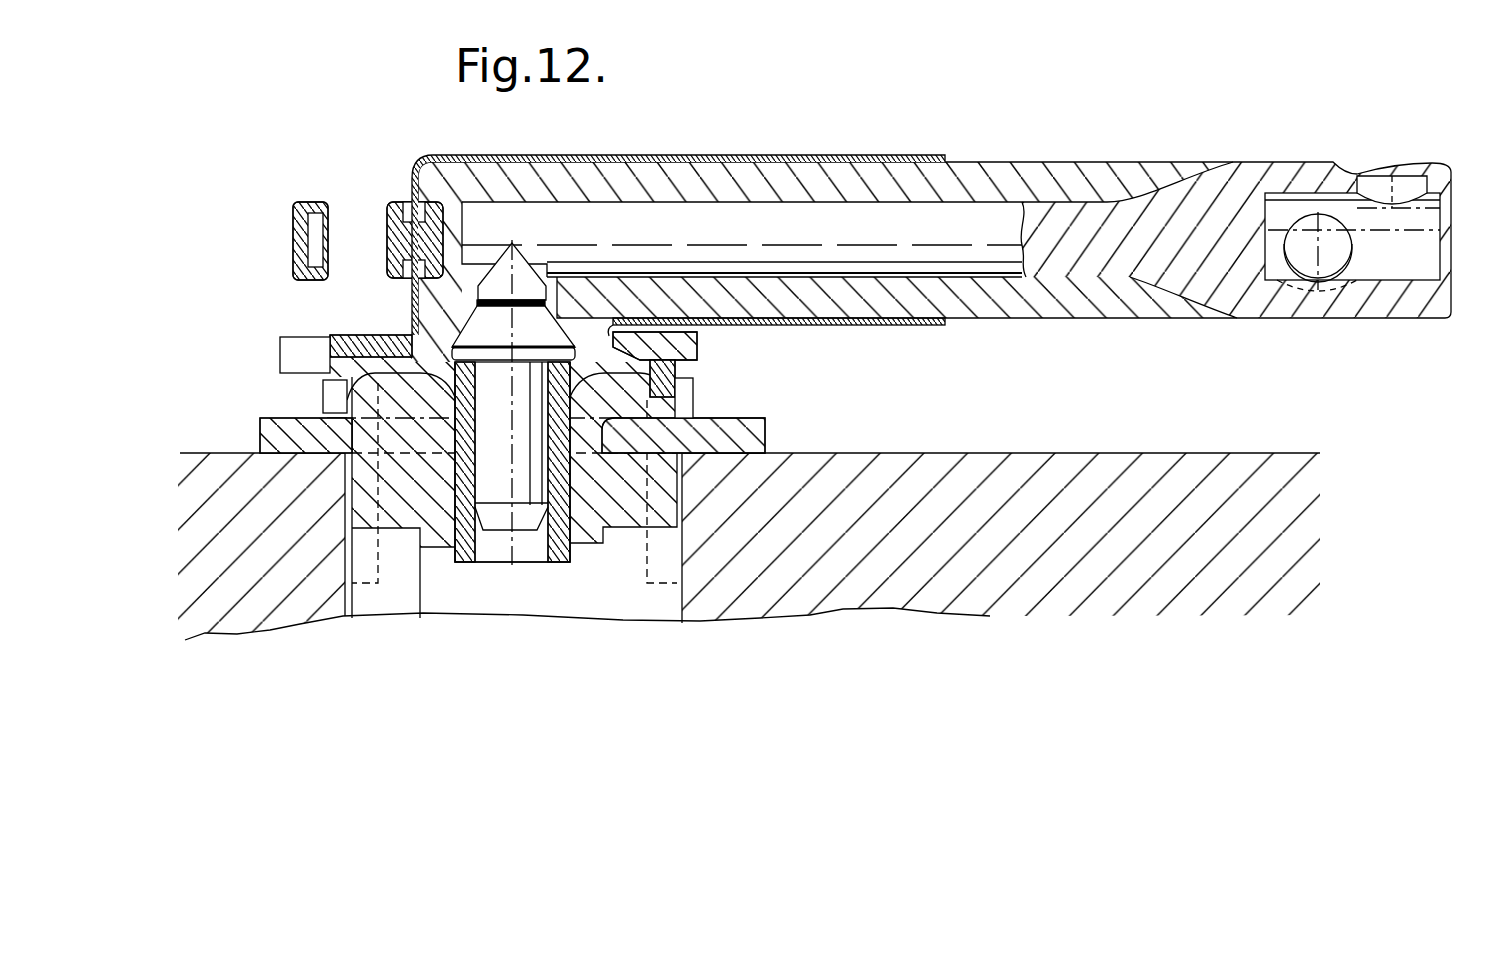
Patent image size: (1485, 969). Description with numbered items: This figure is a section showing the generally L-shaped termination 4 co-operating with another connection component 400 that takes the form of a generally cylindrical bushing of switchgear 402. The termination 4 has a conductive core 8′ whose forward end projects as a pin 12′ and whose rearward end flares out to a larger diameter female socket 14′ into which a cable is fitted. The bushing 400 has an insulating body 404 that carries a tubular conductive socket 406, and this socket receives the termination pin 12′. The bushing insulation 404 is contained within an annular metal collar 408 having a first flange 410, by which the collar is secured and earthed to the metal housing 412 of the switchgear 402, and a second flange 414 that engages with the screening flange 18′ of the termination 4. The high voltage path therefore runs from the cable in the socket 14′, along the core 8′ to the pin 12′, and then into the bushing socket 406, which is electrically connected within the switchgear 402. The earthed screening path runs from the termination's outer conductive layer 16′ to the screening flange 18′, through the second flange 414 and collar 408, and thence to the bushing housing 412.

The termination 4 is at (970, 150).
The conductive core 8′ is at (861, 213).
The pin 12′ is at (527, 537).
The female socket 14′ is at (1320, 183).
The outer conductive layer 16′ is at (768, 80).
The screening flange 18′ is at (377, 335).
The connection component 400 is at (770, 436).
The switchgear 402 is at (1167, 447).
The insulating body 404 is at (592, 530).
The tubular conductive socket 406 is at (508, 548).
The annular metal collar 408 is at (400, 520).
The first flange 410 is at (290, 427).
The metal housing 412 is at (1055, 452).
The second flange 414 is at (617, 370).